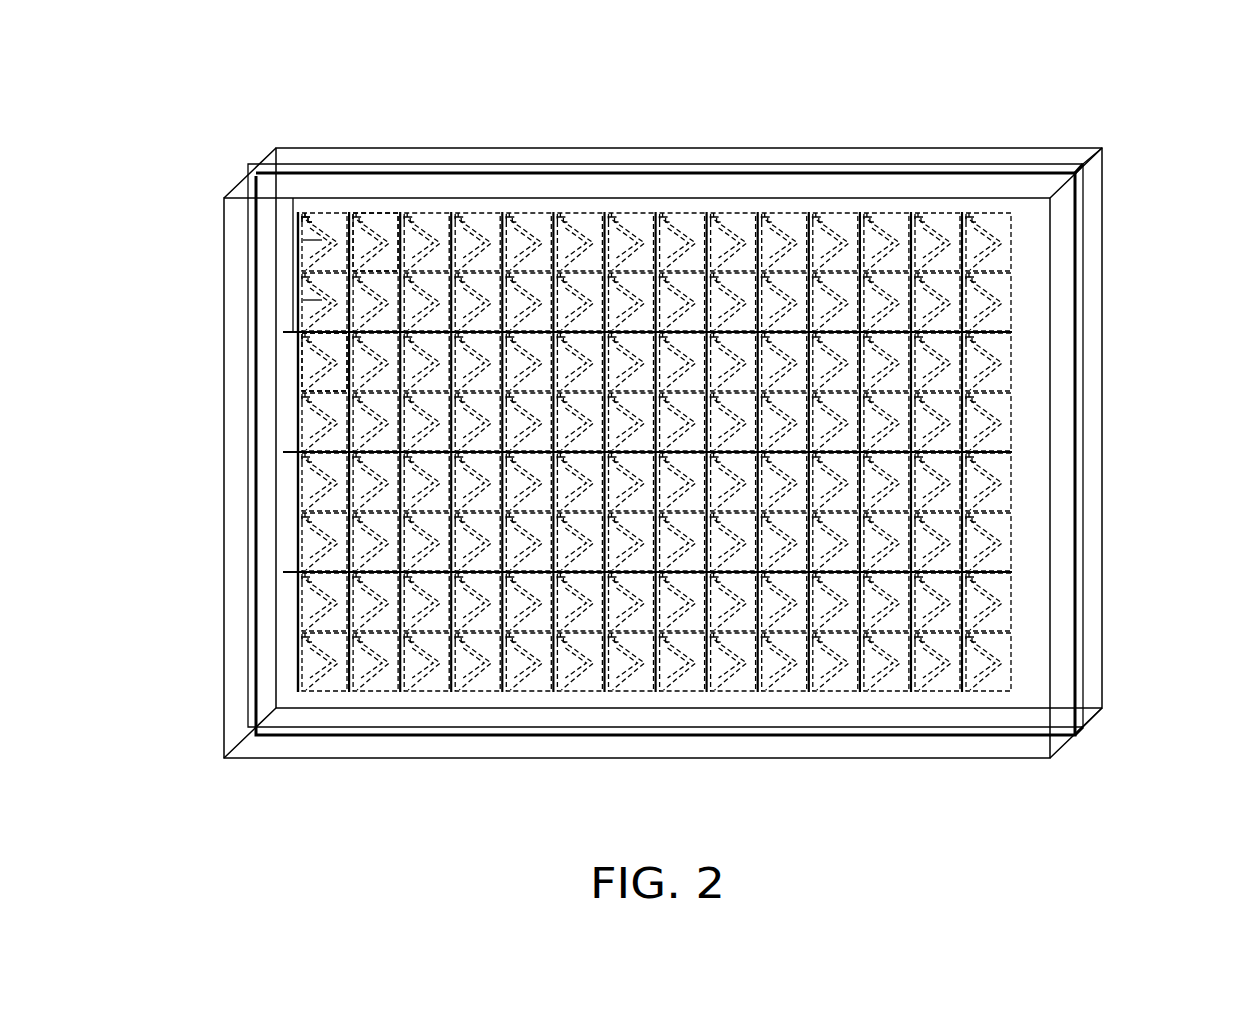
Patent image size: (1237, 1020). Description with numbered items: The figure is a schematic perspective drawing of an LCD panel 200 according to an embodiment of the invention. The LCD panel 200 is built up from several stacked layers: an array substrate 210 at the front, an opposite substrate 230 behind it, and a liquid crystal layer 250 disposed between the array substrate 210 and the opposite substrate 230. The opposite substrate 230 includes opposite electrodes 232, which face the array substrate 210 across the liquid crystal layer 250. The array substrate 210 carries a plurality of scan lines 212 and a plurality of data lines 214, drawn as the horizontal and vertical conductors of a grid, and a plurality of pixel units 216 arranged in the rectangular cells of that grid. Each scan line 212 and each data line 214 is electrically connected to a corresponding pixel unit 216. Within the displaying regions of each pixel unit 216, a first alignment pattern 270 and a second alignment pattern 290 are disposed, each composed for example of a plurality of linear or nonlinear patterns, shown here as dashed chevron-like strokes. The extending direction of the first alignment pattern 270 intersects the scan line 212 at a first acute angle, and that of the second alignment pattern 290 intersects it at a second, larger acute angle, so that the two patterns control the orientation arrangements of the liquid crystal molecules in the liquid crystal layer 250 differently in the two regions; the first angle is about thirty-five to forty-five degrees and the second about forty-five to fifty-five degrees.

The LCD panel 200 is at (1180, 812).
The array substrate 210 is at (1052, 150).
The scan line 212 is at (313, 212).
The data line 214 is at (298, 235).
The pixel unit 216 is at (294, 302).
The opposite substrate 230 is at (1060, 222).
The opposite electrode 232 is at (990, 174).
The liquid crystal layer 250 is at (1090, 176).
The first alignment pattern 270 is at (340, 212).
The second alignment pattern 290 is at (288, 338).